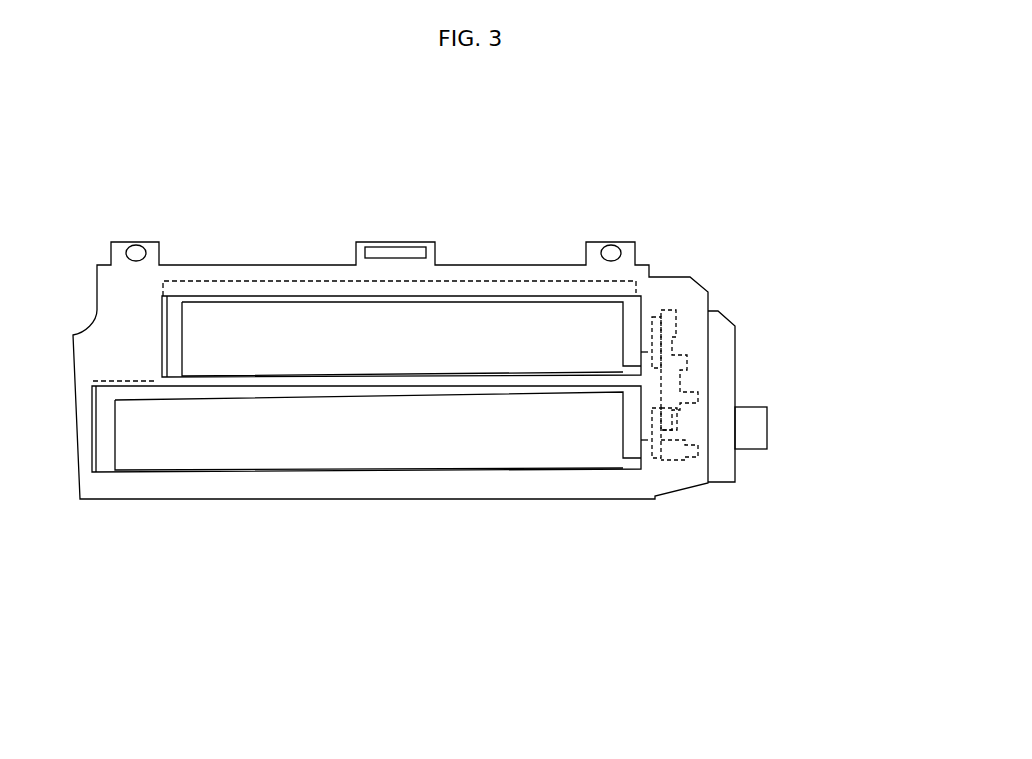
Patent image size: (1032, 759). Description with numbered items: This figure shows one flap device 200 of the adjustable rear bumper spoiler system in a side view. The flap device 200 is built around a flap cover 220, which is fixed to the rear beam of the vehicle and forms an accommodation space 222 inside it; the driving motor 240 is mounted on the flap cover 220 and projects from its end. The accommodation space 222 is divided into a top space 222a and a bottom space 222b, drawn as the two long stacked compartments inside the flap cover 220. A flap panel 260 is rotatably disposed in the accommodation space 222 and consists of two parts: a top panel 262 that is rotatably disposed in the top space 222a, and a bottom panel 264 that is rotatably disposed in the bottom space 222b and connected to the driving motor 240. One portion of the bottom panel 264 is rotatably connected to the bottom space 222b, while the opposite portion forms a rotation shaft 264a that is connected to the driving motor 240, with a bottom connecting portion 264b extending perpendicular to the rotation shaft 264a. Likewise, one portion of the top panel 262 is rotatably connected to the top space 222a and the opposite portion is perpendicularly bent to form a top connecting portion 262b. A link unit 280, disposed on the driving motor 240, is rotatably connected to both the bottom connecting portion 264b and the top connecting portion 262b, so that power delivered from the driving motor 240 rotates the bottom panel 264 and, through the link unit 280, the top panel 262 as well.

The flap device 200 is at (333, 240).
The flap cover 220 is at (137, 285).
The accommodation space 222 is at (635, 148).
The top space 222a is at (468, 345).
The bottom space 222b is at (578, 433).
The driving motor 240 is at (727, 432).
The flap panel 260 is at (273, 623).
The top panel 262 is at (250, 302).
The top connecting portion 262b is at (648, 353).
The bottom panel 264 is at (152, 400).
The rotation shaft 264a is at (678, 457).
The bottom connecting portion 264b is at (657, 453).
The link unit 280 is at (665, 390).